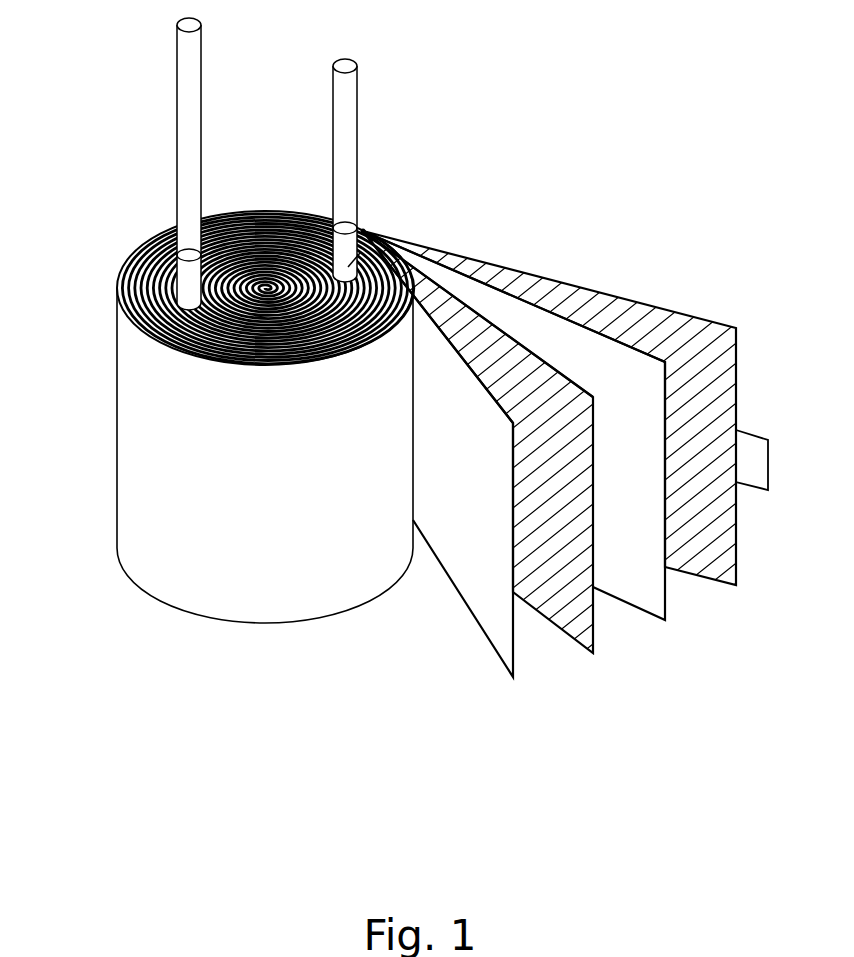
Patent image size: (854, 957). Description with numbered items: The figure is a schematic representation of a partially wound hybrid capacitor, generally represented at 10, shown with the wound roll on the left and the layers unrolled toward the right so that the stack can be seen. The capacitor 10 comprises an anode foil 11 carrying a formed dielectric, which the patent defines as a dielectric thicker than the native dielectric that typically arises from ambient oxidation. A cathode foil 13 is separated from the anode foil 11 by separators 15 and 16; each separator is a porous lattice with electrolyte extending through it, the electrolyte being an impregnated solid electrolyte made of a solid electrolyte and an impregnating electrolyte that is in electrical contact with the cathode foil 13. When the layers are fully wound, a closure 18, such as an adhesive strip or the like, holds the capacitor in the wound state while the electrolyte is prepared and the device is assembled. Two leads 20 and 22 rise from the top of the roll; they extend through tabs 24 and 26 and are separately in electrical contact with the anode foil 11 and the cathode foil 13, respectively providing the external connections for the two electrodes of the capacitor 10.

The capacitor 10 is at (612, 202).
The anode foil 11 is at (492, 610).
The cathode foil 13 is at (640, 575).
The separator 15 is at (568, 605).
The separator 16 is at (710, 543).
The closure 18 is at (752, 452).
The lead 20 is at (188, 137).
The lead 22 is at (345, 132).
The tab 24 is at (185, 283).
The tab 26 is at (386, 233).